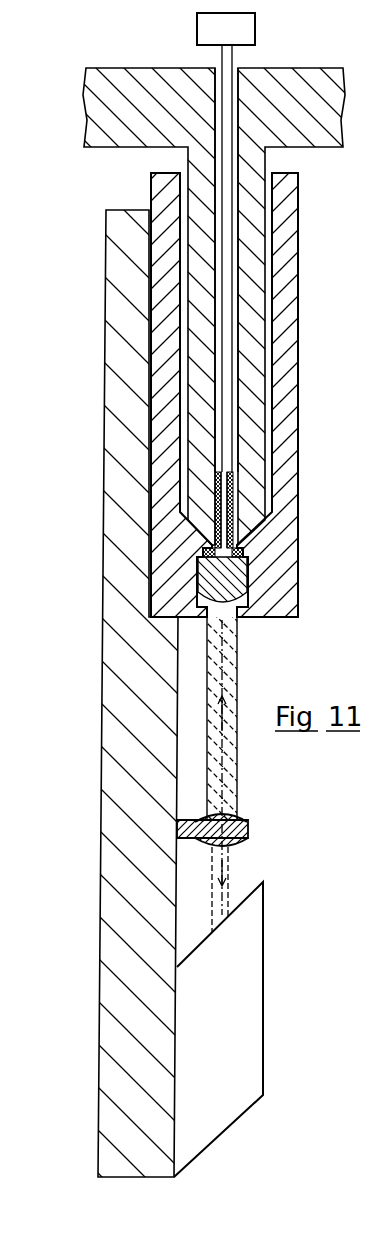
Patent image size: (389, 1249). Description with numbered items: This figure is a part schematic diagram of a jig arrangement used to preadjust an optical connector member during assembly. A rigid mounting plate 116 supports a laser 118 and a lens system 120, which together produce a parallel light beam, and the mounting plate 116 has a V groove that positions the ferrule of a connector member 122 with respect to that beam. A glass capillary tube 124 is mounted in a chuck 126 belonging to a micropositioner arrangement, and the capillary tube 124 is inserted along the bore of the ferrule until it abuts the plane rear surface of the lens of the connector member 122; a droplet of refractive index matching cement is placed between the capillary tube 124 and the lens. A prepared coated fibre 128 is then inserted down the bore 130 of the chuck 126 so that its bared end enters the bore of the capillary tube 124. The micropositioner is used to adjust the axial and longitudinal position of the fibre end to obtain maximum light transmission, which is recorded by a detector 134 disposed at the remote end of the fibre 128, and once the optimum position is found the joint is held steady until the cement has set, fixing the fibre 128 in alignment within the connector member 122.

The rigid mounting plate 116 is at (110, 362).
The laser 118 is at (257, 1000).
The lens system 120 is at (248, 822).
The connector member 122 is at (285, 560).
The glass capillary tube 124 is at (230, 498).
The chuck 126 is at (193, 498).
The prepared coated fibre 128 is at (232, 350).
The bore 130 is at (237, 242).
The detector 134 is at (255, 28).